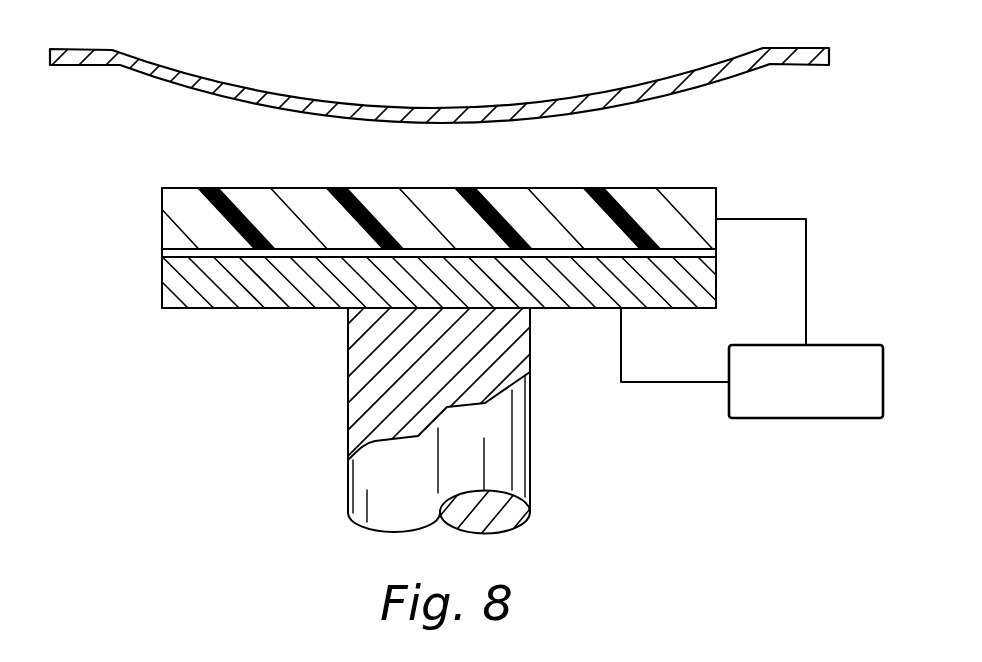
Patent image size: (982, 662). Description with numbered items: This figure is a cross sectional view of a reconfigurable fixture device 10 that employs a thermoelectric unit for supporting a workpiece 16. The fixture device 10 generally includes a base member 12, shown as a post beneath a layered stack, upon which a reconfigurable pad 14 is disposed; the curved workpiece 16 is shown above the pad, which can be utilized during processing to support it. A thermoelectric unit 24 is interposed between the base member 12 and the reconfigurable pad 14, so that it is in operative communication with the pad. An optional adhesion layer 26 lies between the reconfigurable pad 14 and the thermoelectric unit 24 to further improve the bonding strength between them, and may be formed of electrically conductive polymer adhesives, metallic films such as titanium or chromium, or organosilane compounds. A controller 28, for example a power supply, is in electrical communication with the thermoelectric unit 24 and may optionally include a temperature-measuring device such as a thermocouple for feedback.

The fixture device 10 is at (221, 403).
The base member 12 is at (503, 437).
The reconfigurable pad 14 is at (193, 217).
The workpiece 16 is at (255, 88).
The thermoelectric unit 24 is at (262, 298).
The adhesion layer 26 is at (197, 254).
The controller 28 is at (779, 418).